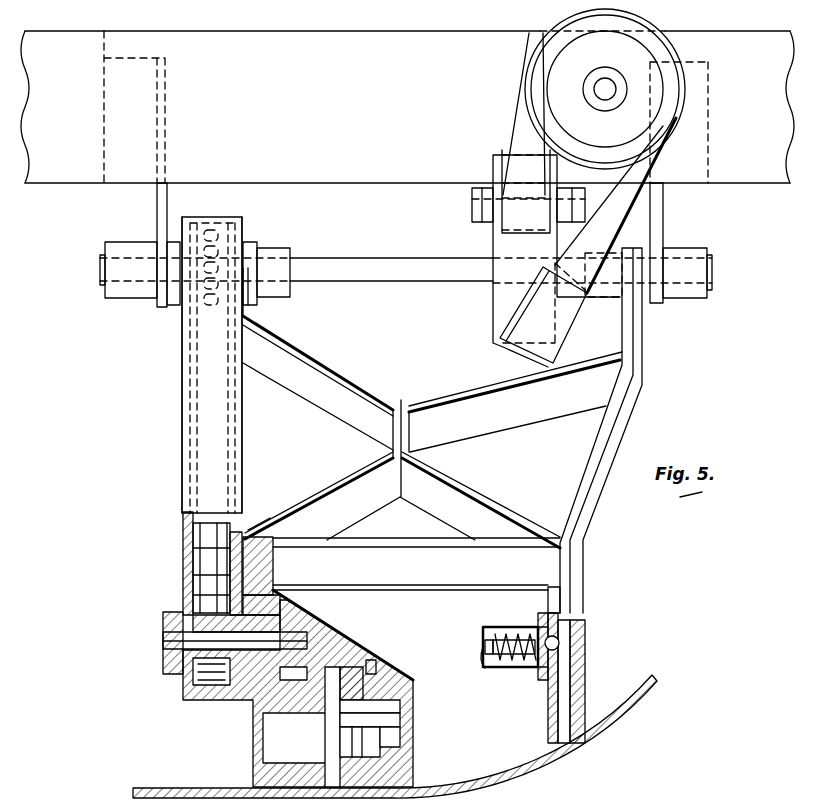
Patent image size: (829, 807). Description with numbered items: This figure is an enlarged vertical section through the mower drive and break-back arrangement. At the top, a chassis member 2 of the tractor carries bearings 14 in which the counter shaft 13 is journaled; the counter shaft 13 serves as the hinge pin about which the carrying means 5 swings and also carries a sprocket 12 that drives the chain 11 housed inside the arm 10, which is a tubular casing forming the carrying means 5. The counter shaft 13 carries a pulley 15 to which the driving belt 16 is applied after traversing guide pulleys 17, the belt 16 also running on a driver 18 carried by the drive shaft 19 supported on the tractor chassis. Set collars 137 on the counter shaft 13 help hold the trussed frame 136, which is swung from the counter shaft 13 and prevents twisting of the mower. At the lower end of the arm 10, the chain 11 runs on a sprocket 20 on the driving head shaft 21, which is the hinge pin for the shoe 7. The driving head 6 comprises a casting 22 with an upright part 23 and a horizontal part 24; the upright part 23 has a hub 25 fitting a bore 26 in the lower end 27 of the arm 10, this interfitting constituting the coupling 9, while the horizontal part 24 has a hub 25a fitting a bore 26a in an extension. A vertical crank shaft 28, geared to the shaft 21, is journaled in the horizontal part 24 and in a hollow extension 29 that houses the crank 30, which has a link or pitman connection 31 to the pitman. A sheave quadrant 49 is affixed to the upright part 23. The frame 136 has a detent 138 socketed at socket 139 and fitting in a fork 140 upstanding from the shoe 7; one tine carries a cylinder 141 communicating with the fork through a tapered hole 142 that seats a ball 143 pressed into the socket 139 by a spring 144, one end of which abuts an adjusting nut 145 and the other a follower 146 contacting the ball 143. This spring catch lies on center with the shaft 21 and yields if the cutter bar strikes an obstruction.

The chassis member 2 is at (71, 170).
The carrying means 5 is at (178, 393).
The driving head 6 is at (337, 620).
The shoe 7 is at (630, 696).
The coupling 9 is at (171, 589).
The arm 10 is at (182, 412).
The drive chain 11 is at (184, 524).
The sprocket 12 is at (240, 221).
The counter shaft 13 is at (315, 262).
The bearings 14 is at (157, 193).
The pulley 15 is at (497, 299).
The driving belt 16 is at (620, 212).
The guide pulleys 17 is at (500, 222).
The driver 18 is at (673, 82).
The drive shaft 19 is at (607, 88).
The sprocket 20 is at (163, 641).
The driving head shaft 21 is at (165, 622).
The casting 22 is at (313, 676).
The upright part 23 is at (278, 596).
The horizontal part 24 is at (362, 678).
The hub 25 is at (278, 583).
The hub 25a is at (385, 683).
The bore 26 is at (278, 548).
The bore 26a is at (256, 705).
The lower end 27 is at (172, 596).
The crank shaft 28 is at (367, 672).
The hollow extension 29 is at (374, 750).
The crank 30 is at (389, 703).
The link or pitman connection 31 is at (375, 733).
The sheave quadrant 49 is at (252, 536).
The trussed frame 136 is at (590, 518).
The set collars 137 is at (281, 297).
The detent 138 is at (580, 600).
The socket 139 is at (558, 640).
The fork 140 is at (565, 652).
The cylinder 141 is at (503, 627).
The tapered hole 142 is at (560, 618).
The ball 143 is at (556, 646).
The spring 144 is at (526, 670).
The nut 145 is at (532, 666).
The follower 146 is at (537, 672).